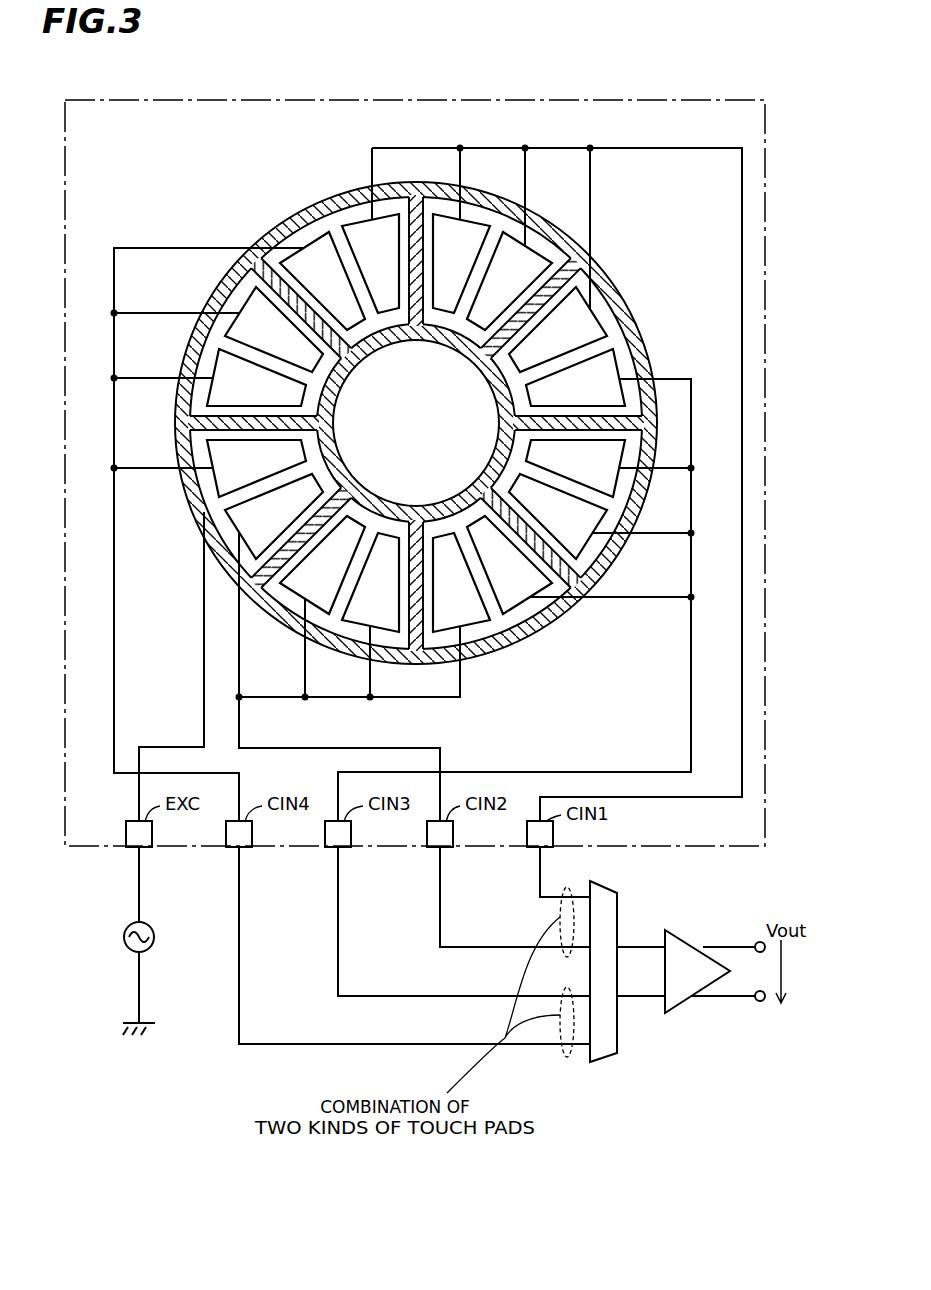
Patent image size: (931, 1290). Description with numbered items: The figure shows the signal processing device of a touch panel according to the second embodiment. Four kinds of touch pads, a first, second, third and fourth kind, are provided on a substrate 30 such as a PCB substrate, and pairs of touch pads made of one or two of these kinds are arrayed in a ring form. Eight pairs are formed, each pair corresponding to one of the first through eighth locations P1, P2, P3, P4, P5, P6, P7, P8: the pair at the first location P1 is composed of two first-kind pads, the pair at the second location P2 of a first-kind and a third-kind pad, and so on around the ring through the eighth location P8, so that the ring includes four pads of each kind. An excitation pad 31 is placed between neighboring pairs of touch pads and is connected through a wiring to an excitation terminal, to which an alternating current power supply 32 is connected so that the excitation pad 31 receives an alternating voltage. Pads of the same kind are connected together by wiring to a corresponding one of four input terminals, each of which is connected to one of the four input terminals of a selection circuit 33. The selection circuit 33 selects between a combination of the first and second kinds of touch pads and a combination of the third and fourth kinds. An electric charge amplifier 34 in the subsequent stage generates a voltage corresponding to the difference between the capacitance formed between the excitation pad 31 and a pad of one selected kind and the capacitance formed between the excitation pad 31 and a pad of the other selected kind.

The substrate 30 is at (610, 106).
The excitation pad 31 is at (607, 284).
The alternating current power supply 32 is at (157, 938).
The selection circuit 33 is at (607, 1055).
The electric charge amplifier 34 is at (680, 1005).
The first location P1 is at (493, 223).
The second location P2 is at (616, 334).
The third location P3 is at (614, 498).
The fourth location P4 is at (506, 618).
The fifth location P5 is at (337, 623).
The sixth location P6 is at (215, 510).
The seventh location P7 is at (216, 347).
The eighth location P8 is at (326, 226).